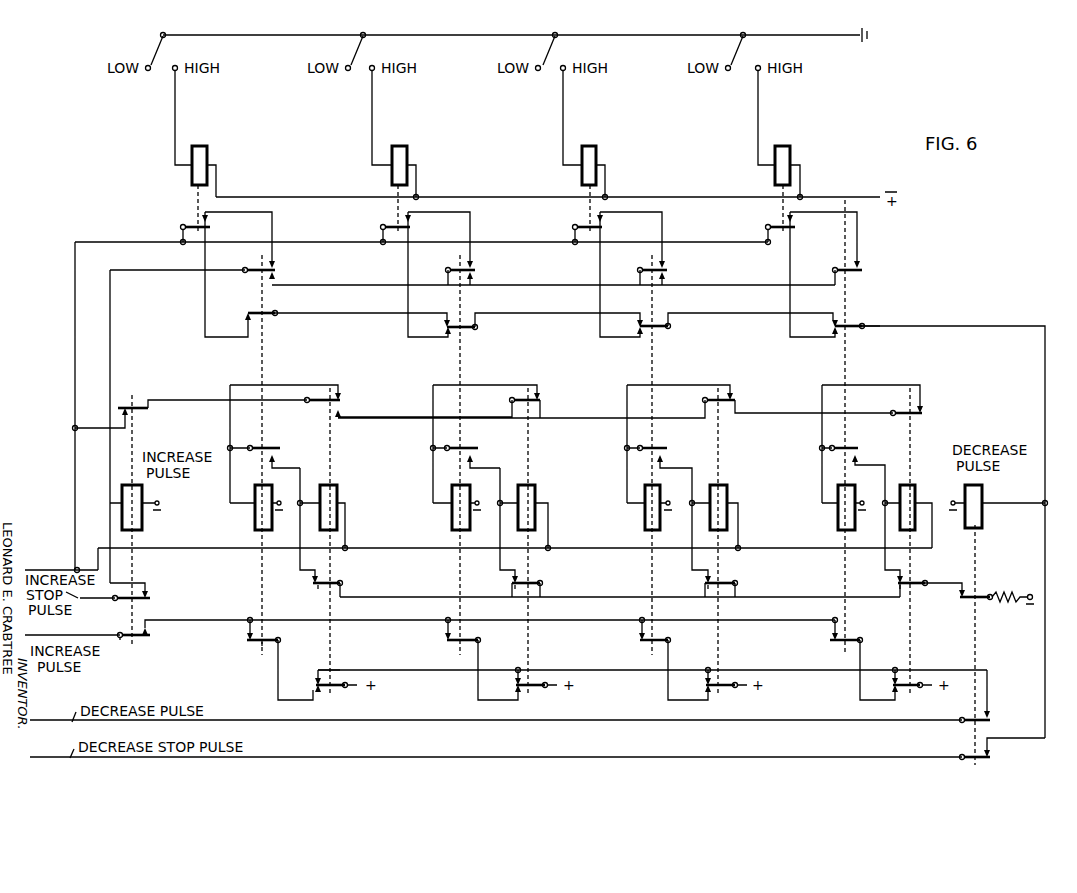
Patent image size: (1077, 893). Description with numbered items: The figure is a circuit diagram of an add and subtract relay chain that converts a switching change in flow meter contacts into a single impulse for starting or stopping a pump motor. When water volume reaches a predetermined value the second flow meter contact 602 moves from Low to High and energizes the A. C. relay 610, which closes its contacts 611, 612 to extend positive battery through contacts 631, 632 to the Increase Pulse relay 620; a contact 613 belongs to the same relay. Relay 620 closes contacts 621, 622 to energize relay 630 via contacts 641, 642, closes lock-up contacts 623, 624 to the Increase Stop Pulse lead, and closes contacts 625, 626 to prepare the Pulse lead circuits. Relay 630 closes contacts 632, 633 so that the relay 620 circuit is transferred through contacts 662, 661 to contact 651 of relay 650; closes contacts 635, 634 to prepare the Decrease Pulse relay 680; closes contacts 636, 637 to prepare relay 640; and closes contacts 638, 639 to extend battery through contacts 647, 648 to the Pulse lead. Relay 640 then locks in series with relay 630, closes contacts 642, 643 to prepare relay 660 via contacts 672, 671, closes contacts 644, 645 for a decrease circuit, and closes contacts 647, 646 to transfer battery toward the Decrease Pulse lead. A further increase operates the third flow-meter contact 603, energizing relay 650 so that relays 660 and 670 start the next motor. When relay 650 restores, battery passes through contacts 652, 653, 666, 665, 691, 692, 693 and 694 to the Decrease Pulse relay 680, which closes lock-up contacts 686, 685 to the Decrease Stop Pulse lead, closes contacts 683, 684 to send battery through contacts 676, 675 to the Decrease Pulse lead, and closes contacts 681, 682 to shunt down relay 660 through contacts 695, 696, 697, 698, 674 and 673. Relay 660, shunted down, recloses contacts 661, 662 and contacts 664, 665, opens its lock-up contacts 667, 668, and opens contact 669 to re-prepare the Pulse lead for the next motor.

The second flow meter contact 602 is at (163, 33).
The third flow-meter contact 603 is at (363, 33).
The A. C. relay 610 is at (207, 155).
The contact 611 is at (193, 222).
The contact 612 is at (181, 228).
The contact 613 is at (212, 228).
The Increase Pulse relay 620 is at (143, 500).
The contact 621 is at (125, 405).
The contact 622 is at (130, 420).
The contact 623 is at (148, 588).
The contact 624 is at (152, 598).
The contact 625 is at (150, 629).
The contact 626 is at (148, 640).
The relay 630 is at (255, 505).
The contact 631 is at (279, 271).
The contact 632 is at (244, 269).
The contact 633 is at (275, 279).
The contact 634 is at (272, 311).
The contact 635 is at (258, 316).
The contact 636 is at (270, 447).
The contact 637 is at (275, 459).
The contact 638 is at (280, 640).
The contact 639 is at (262, 647).
The relay 640 is at (337, 505).
The contact 641 is at (344, 396).
The contact 642 is at (328, 395).
The contact 643 is at (345, 411).
The contact 644 is at (326, 586).
The contact 645 is at (320, 590).
The contact 646 is at (322, 670).
The contact 647 is at (325, 692).
The contact 648 is at (312, 695).
The relay 650 is at (407, 155).
The contact 651 is at (395, 222).
The contact 652 is at (380, 228).
The contact 653 is at (412, 228).
The relay 660 is at (452, 511).
The contact 661 is at (477, 270).
The contact 662 is at (448, 269).
The contact 664 is at (445, 318).
The contact 665 is at (462, 332).
The contact 666 is at (442, 338).
The contact 667 is at (458, 446).
The contact 668 is at (476, 458).
The contact 669 is at (472, 640).
The relay 670 is at (535, 511).
The contact 671 is at (541, 393).
The contact 672 is at (512, 398).
The contact 673 is at (525, 585).
The contact 674 is at (520, 592).
The contact 675 is at (525, 683).
The contact 676 is at (520, 692).
The Decrease Pulse relay 680 is at (982, 501).
The contact 681 is at (968, 590).
The contact 682 is at (966, 602).
The contact 683 is at (992, 716).
The contact 684 is at (958, 720).
The contact 685 is at (990, 752).
The contact 686 is at (990, 759).
The contact 691 is at (650, 290).
The contact 692 is at (655, 333).
The contact 693 is at (848, 322).
The contact 694 is at (850, 330).
The contact 695 is at (907, 583).
The contact 696 is at (902, 590).
The contact 697 is at (722, 583).
The contact 698 is at (712, 590).